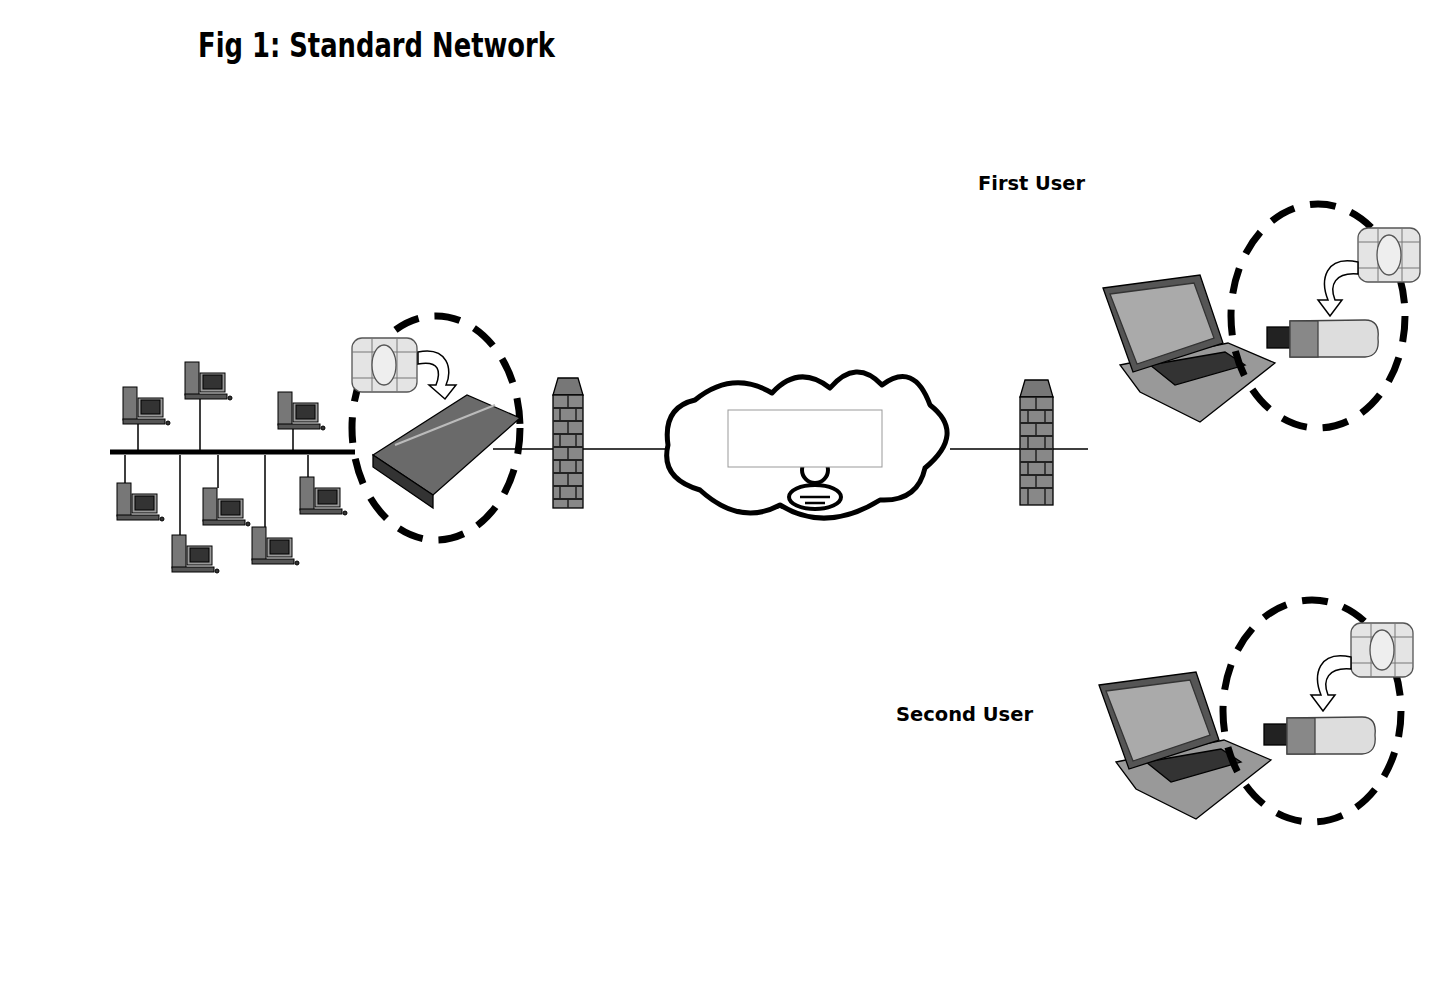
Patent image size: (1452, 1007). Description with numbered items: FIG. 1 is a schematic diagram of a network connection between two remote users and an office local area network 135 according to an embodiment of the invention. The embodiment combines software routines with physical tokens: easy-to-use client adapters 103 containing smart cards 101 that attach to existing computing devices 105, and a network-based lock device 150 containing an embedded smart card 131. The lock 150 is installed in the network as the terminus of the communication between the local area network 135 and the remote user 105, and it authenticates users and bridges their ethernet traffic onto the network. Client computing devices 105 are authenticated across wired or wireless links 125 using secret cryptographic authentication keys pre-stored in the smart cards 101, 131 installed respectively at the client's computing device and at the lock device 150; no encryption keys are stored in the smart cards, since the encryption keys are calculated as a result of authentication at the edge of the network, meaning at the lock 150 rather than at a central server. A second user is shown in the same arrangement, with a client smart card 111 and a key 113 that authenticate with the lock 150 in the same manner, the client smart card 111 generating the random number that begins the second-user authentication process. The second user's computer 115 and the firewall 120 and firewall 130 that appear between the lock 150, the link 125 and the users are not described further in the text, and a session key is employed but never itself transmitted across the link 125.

The smart card 101 is at (1389, 218).
The client adapter 103 is at (1357, 363).
The computing device 105 is at (1193, 436).
The client smart card 111 is at (1384, 615).
The key 113 is at (1355, 758).
The PC (second user) 115 is at (1191, 832).
The firewall (WAN side) 120 is at (1036, 525).
The wired or wireless link 125 is at (805, 370).
The firewall (LAN side) 130 is at (571, 526).
The embedded smart card 131 is at (382, 328).
The local area network 135 is at (237, 440).
The lock device 150 is at (440, 552).